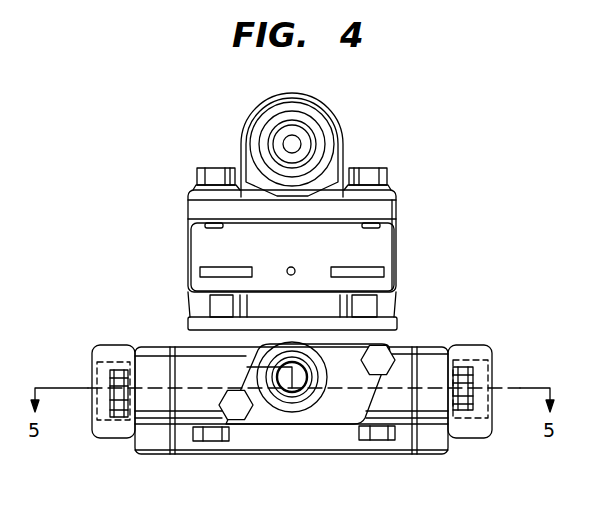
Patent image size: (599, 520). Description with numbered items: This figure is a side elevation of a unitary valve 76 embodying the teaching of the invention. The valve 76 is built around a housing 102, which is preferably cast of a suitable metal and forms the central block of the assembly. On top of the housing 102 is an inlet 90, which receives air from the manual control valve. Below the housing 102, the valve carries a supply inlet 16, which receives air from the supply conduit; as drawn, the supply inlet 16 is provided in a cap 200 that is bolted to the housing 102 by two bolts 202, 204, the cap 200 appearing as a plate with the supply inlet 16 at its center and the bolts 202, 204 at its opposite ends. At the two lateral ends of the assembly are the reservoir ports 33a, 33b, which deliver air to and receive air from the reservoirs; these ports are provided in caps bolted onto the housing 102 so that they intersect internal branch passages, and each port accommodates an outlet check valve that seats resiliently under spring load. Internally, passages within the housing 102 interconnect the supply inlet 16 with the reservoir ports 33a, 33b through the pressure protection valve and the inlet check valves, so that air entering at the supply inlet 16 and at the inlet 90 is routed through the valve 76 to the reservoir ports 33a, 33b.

The valve 76 is at (421, 211).
The inlet 90 is at (312, 131).
The housing 102 is at (397, 247).
The reservoir port 33a is at (97, 362).
The reservoir port 33b is at (492, 356).
The cap 200 is at (338, 424).
The supply inlet 16 is at (292, 397).
The bolt 202 is at (237, 421).
The bolt 204 is at (396, 352).